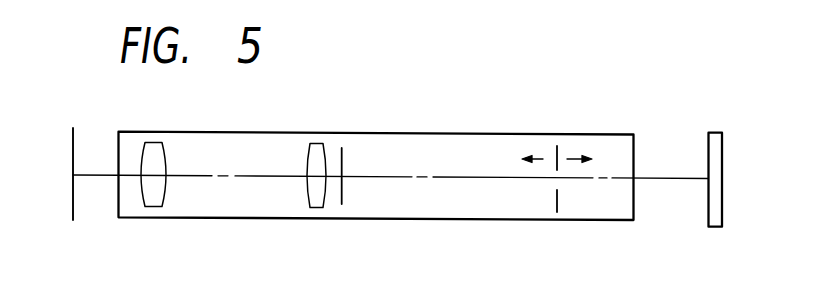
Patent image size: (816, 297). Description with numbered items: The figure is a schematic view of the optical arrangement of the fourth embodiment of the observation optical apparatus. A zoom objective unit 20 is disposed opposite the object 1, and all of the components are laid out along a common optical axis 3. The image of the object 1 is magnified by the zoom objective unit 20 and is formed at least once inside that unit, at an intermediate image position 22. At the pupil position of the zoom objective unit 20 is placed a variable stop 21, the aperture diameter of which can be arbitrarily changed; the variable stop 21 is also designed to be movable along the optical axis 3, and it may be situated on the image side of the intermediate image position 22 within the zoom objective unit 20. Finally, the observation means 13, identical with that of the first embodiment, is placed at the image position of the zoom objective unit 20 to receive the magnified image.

The object 1 is at (73, 131).
The optical axis 3 is at (96, 176).
The observation means 13 is at (715, 132).
The zoom objective unit 20 is at (430, 220).
The variable stop 21 is at (557, 146).
The intermediate image position 22 is at (342, 158).